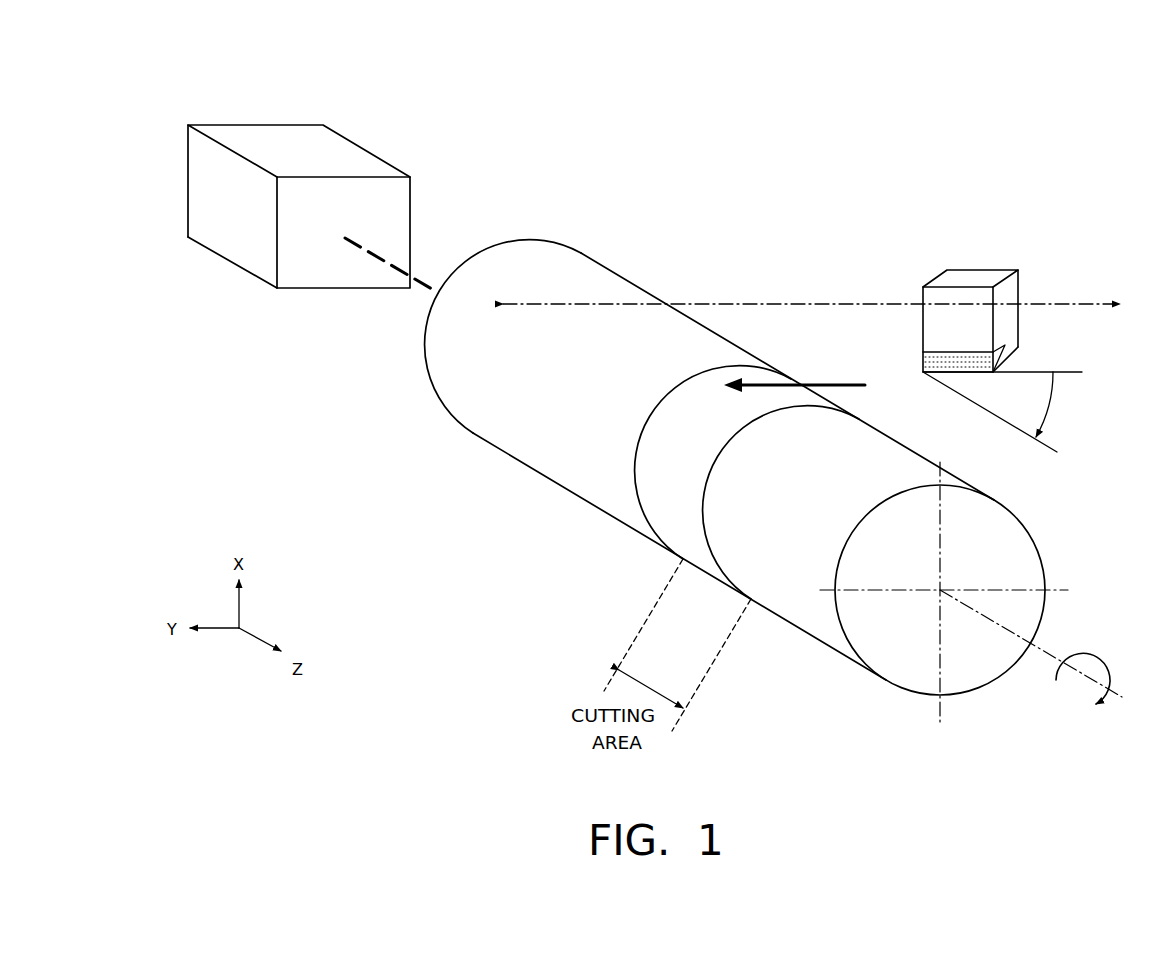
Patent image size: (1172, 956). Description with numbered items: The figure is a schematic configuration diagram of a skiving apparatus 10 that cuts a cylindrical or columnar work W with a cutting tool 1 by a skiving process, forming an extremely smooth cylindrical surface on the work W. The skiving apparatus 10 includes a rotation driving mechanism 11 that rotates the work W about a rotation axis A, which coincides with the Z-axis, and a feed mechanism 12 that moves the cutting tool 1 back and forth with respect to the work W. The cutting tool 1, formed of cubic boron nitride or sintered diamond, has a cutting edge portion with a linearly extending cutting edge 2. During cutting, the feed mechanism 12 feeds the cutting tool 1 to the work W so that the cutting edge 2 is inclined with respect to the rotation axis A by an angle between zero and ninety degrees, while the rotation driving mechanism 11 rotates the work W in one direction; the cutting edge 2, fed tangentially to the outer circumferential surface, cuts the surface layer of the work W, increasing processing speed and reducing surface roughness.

The cutting tool 1 is at (915, 296).
The cutting edge 2 is at (988, 375).
The skiving apparatus 10 is at (774, 120).
The rotation driving mechanism 11 is at (182, 139).
The feed mechanism 12 is at (737, 297).
The work W is at (542, 480).
The rotation axis A is at (1100, 684).